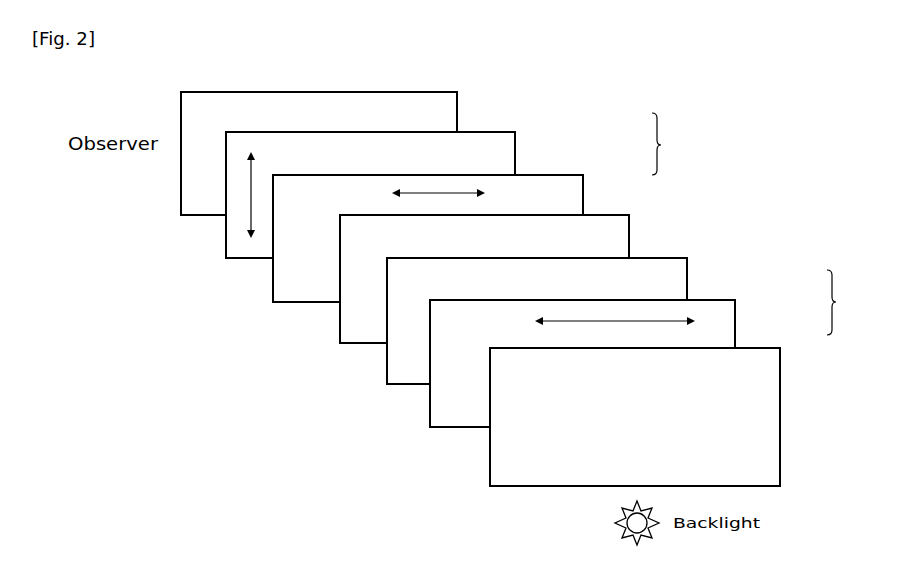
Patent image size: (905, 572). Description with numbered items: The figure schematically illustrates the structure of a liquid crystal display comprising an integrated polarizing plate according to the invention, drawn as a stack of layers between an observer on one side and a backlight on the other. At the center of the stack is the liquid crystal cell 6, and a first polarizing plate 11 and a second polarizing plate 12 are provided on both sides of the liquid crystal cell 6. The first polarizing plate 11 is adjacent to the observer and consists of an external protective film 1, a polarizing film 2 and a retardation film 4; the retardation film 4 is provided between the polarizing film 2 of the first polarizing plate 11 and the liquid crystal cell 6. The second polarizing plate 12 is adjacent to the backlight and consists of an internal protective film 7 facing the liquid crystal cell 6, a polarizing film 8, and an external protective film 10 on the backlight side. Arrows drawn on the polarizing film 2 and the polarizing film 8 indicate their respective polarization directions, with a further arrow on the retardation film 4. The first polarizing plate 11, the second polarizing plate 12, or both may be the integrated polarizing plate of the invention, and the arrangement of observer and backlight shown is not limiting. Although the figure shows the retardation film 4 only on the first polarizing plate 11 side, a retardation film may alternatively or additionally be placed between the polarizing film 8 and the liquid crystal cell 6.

The external protective film 1 is at (445, 115).
The polarizing film 2 is at (505, 158).
The retardation film 4 is at (572, 197).
The liquid crystal cell 6 is at (340, 318).
The internal protective film 7 is at (680, 280).
The polarizing film 8 is at (718, 325).
The external protective film 10 is at (770, 363).
The first polarizing plate 11 is at (668, 144).
The second polarizing plate 12 is at (842, 302).